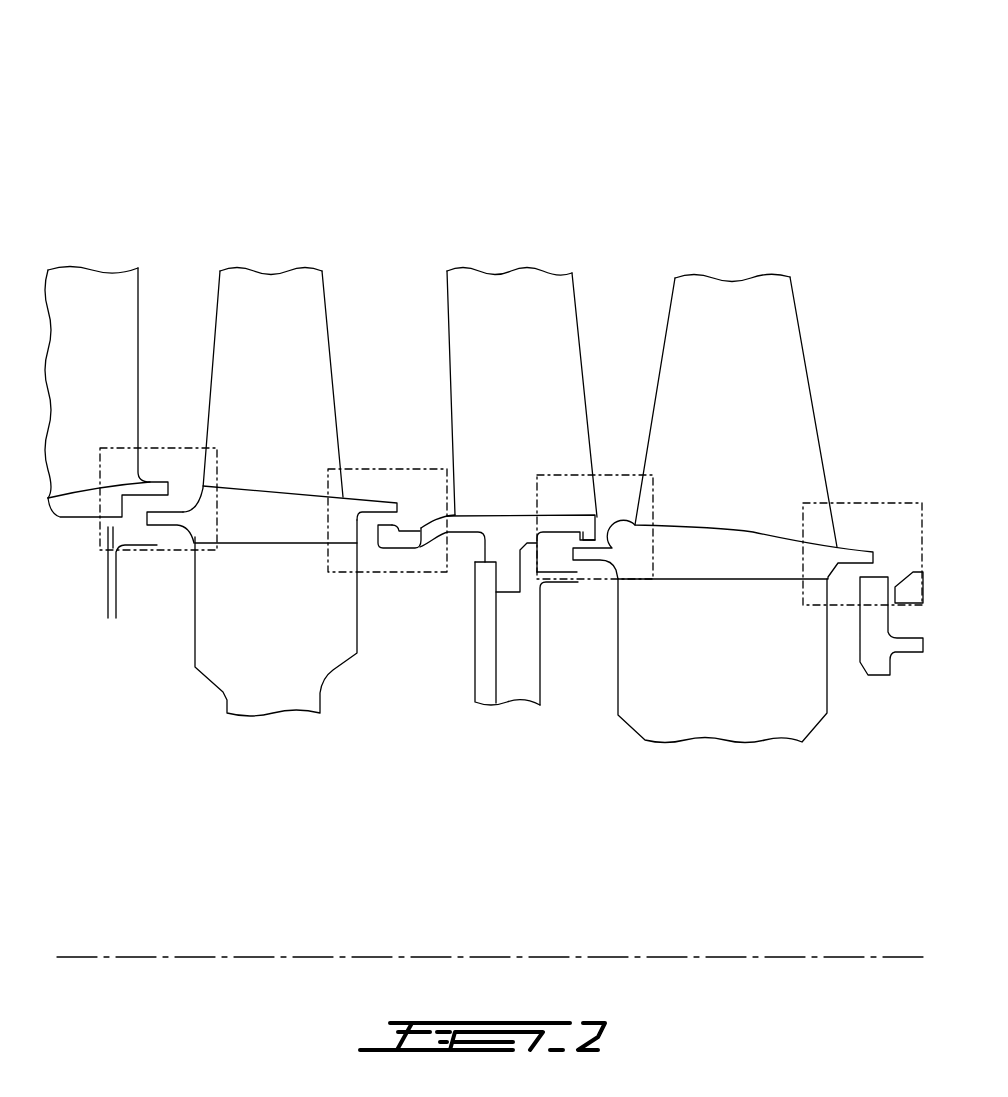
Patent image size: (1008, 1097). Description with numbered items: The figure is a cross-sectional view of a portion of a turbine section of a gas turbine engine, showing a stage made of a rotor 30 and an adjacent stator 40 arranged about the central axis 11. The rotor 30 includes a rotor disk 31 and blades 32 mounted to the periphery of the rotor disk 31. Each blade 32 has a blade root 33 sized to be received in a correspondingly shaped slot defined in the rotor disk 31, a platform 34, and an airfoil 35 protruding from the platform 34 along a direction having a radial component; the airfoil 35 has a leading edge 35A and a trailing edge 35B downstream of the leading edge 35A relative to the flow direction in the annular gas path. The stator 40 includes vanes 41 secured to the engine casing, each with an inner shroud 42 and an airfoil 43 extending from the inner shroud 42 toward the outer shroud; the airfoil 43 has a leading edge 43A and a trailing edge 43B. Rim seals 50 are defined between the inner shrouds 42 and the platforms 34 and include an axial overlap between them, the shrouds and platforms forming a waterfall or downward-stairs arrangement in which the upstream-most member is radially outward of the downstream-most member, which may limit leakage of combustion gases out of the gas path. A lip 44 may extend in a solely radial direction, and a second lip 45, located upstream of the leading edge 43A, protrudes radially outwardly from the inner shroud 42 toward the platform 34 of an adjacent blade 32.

The central axis 11 is at (748, 955).
The rotor 30 is at (725, 250).
The rotor disk 31 is at (250, 684).
The blades 32 is at (219, 305).
The blade root 33 is at (222, 590).
The platform 34 is at (205, 515).
The airfoil 35 is at (277, 322).
The leading edge 35A is at (217, 365).
The trailing edge 35B is at (333, 342).
The stator 40 is at (47, 547).
The vanes 41 is at (482, 302).
The inner shroud 42 is at (420, 548).
The airfoil 43 is at (505, 402).
The leading edge 43A is at (440, 297).
The trailing edge 43B is at (572, 305).
The lip 44 is at (637, 525).
The second lip 45 is at (388, 533).
The rim seals 50 is at (225, 530).